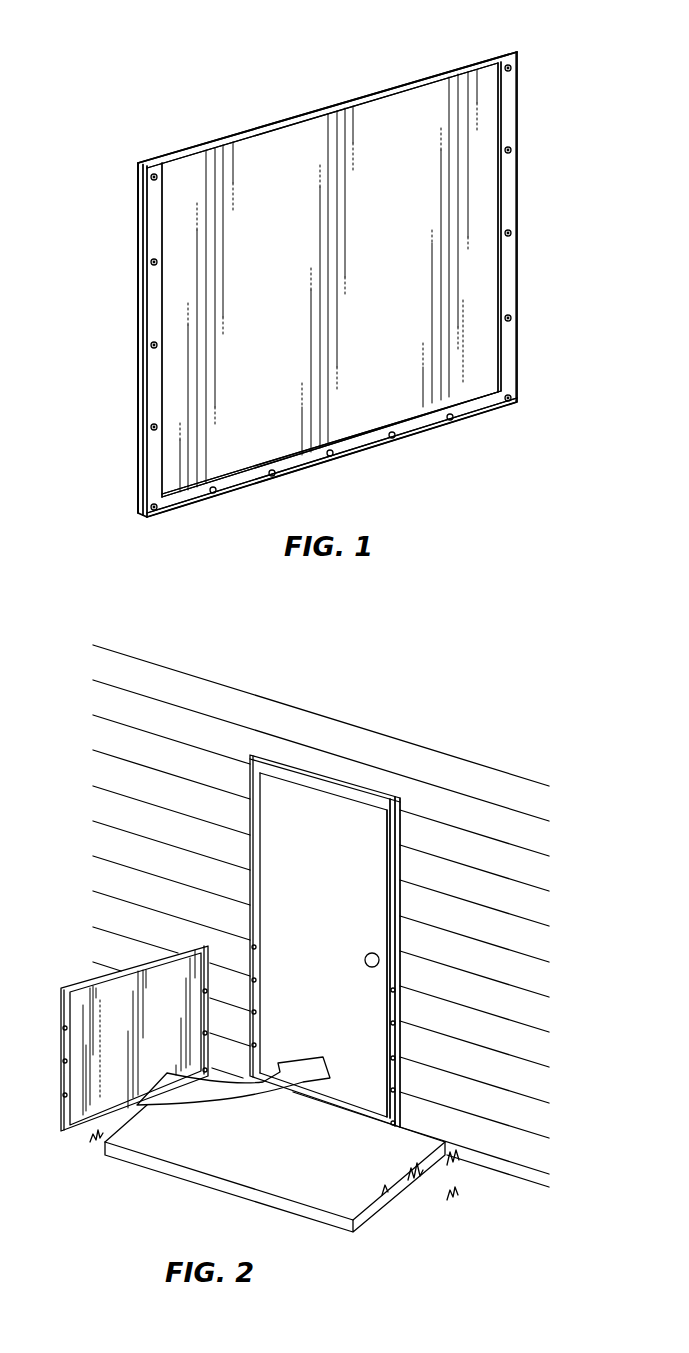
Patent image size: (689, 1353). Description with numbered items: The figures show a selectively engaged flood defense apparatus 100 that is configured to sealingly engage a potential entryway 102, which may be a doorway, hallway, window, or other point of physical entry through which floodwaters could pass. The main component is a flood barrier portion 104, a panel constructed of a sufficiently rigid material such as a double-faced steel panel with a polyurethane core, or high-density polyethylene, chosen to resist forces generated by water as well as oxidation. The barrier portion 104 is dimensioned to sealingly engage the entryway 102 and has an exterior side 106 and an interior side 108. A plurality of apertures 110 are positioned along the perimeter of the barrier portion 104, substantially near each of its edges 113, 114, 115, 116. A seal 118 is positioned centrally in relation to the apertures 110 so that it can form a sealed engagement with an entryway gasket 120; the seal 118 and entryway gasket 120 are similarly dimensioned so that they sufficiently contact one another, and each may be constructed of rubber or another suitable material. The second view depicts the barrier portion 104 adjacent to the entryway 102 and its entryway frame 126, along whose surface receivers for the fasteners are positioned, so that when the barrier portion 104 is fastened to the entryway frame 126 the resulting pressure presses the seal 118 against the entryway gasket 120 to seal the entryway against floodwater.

In FIG. 1, the apparatus 100 is at (151, 110).
In FIG. 2, the entryway 102 is at (338, 808).
In FIG. 1, the flood barrier portion 104 is at (275, 153).
In FIG. 2, the flood barrier portion 104 is at (83, 1003).
In FIG. 1, the exterior side 106 is at (114, 215).
In FIG. 1, the interior side 108 is at (468, 378).
In FIG. 2, the interior side 108 is at (85, 1095).
In FIG. 1, the apertures 110 is at (513, 316).
In FIG. 1, the edge 113 is at (435, 74).
In FIG. 1, the edge 114 is at (517, 145).
In FIG. 1, the edge 115 is at (412, 437).
In FIG. 1, the edge 116 is at (142, 413).
In FIG. 1, the seal 118 is at (150, 302).
In FIG. 2, the entryway gasket 120 is at (397, 1038).
In FIG. 2, the entryway frame 126 is at (387, 893).